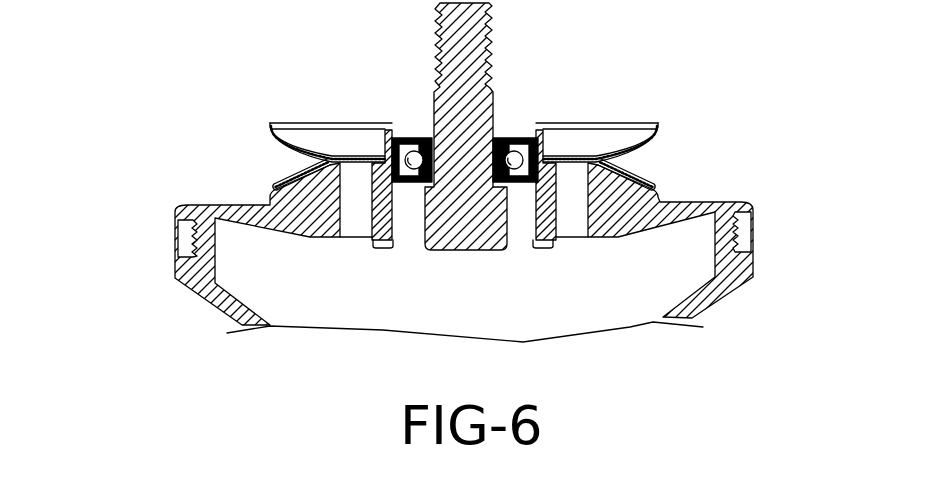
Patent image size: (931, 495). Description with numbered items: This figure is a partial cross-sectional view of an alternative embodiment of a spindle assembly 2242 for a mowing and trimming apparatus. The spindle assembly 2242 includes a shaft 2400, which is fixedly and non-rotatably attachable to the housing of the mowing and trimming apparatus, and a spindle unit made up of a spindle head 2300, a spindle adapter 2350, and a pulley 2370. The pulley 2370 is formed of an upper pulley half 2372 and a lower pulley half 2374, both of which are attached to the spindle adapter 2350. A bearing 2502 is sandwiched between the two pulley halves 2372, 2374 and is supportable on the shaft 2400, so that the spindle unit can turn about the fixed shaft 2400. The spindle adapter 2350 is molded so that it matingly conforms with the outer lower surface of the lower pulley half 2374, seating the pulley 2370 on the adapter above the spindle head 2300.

The spindle head 2300 is at (495, 247).
The spindle assembly 2242 is at (168, 230).
The spindle adapter 2350 is at (748, 210).
The pulley 2370 is at (615, 118).
The upper pulley half 2372 is at (310, 137).
The lower pulley half 2374 is at (281, 182).
The bearing 2502 is at (407, 178).
The shaft 2400 is at (460, 252).